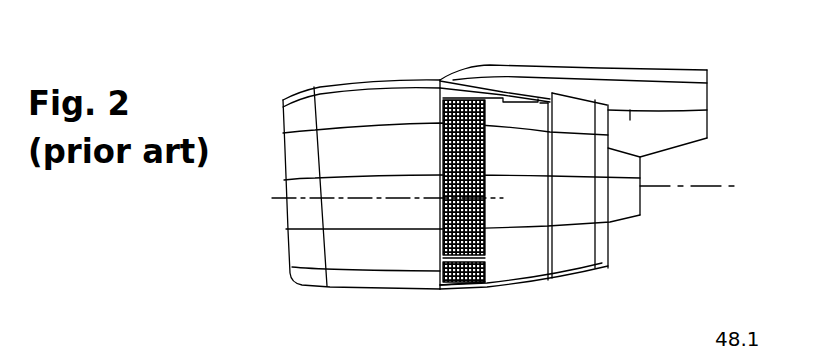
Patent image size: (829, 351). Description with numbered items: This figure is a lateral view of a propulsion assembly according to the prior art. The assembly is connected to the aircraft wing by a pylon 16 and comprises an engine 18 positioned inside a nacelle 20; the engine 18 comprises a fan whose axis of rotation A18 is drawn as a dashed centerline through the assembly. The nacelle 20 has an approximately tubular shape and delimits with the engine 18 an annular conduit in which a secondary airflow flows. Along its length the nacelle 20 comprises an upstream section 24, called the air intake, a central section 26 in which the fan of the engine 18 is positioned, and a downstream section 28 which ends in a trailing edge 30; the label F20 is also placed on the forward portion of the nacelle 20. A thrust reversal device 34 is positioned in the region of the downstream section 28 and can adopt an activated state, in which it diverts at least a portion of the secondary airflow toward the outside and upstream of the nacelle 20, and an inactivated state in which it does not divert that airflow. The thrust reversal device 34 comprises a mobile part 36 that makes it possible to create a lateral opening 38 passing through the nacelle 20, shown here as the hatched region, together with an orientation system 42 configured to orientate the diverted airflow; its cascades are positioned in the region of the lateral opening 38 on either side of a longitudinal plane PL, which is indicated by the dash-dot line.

The pylon 16 is at (672, 75).
The engine 18 is at (622, 220).
The nacelle 20 is at (343, 93).
The front section of nacelle F20 is at (407, 104).
The upstream section 24 is at (292, 256).
The central section 26 is at (385, 273).
The downstream section 28 is at (542, 266).
The trailing edge 30 is at (608, 268).
The thrust reversal device 34 is at (465, 100).
The mobile part 36 is at (540, 117).
The lateral opening 38 is at (485, 292).
The orientation system 42 is at (480, 249).
The longitudinal plane PL is at (298, 199).
The axis of rotation A18 is at (689, 187).